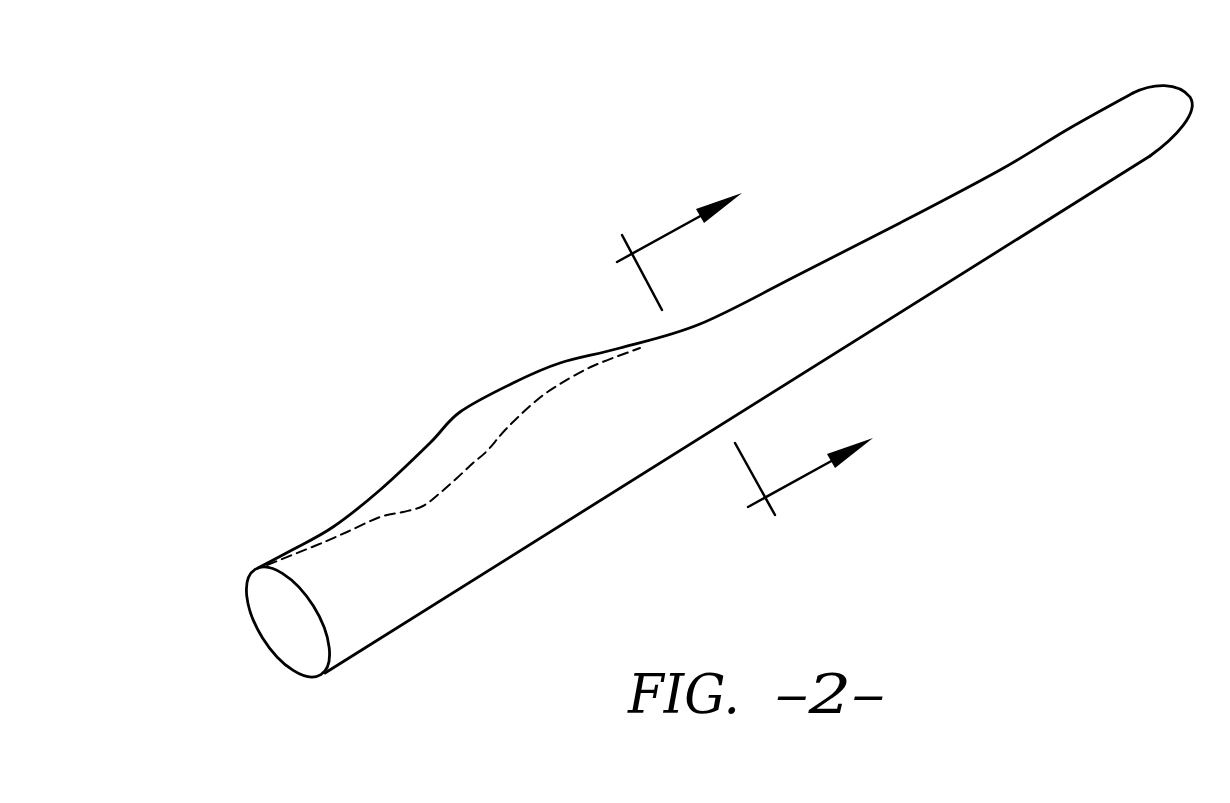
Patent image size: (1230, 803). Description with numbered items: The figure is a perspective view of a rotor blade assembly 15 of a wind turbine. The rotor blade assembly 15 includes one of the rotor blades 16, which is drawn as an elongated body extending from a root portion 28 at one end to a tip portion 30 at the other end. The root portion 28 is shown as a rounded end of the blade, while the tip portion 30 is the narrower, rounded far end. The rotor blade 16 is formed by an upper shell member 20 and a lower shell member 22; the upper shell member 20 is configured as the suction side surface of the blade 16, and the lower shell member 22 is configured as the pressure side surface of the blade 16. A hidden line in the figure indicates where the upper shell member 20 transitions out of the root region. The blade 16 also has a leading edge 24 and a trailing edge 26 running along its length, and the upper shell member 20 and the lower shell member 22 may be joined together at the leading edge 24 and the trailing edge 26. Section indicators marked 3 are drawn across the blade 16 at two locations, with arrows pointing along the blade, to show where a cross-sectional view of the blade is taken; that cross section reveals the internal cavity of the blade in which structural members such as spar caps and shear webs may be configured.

The rotor blade assembly 15 is at (718, 358).
The rotor blade 16 is at (732, 349).
The upper shell member 20 is at (485, 488).
The lower shell member 22 is at (598, 462).
The leading edge 24 is at (876, 330).
The trailing edge 26 is at (858, 247).
The root portion 28 is at (333, 567).
The tip portion 30 is at (1160, 113).
The section line 3- 3 is at (764, 345).